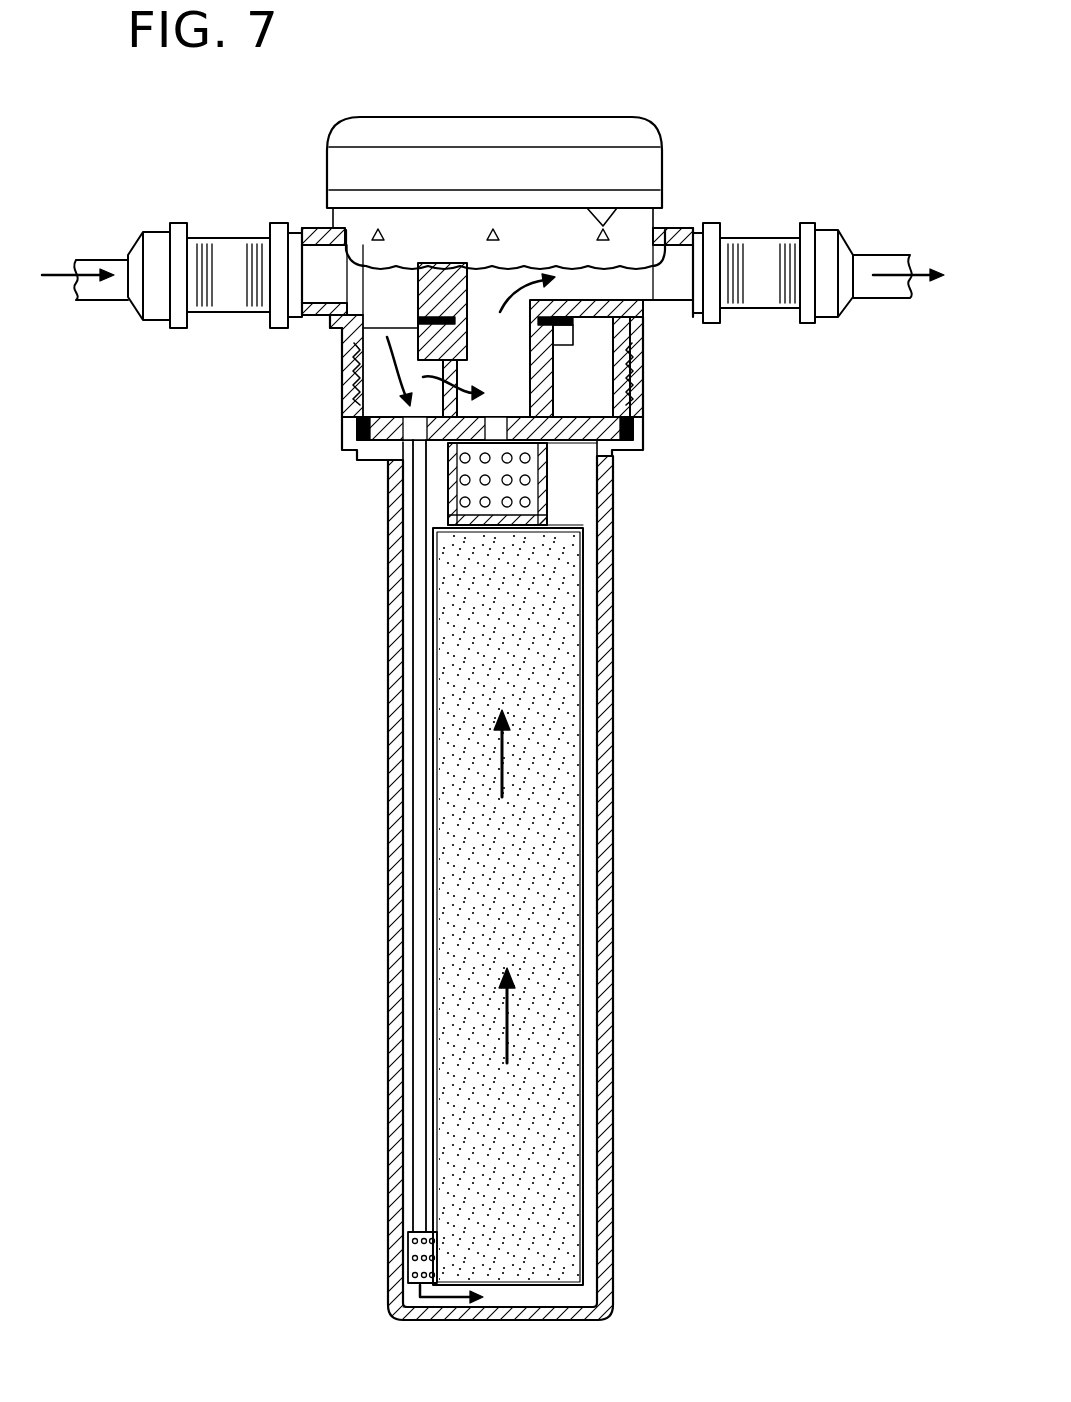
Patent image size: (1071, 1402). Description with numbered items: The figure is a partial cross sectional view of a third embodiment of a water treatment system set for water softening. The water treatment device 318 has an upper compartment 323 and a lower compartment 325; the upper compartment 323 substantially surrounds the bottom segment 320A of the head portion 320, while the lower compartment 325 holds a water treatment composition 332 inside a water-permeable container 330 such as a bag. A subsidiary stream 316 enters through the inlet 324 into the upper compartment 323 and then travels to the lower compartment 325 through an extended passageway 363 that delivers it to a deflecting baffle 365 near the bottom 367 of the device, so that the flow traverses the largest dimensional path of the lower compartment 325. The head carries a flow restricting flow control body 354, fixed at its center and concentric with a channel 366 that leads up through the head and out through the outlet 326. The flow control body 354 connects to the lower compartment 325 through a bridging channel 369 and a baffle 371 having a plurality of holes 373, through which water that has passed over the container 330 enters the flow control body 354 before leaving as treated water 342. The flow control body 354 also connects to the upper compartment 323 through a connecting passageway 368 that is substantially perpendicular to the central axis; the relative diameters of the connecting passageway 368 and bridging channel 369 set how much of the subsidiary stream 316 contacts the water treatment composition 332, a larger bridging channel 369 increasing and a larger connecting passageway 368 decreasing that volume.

The subsidiary stream 316 is at (79, 269).
The water treatment device 318 is at (613, 655).
The head portion 320 is at (284, 432).
The bottom segment 320A is at (650, 380).
The upper compartment 323 is at (383, 357).
The inlet 324 is at (230, 237).
The lower compartment 325 is at (577, 512).
The outlet 326 is at (760, 233).
The water-permeable container 330 is at (585, 740).
The water treatment composition 332 is at (530, 865).
The treated water 342 is at (925, 264).
The flow control body 354 is at (445, 372).
The extended passageway 363 is at (418, 838).
The deflecting baffle 365 is at (403, 1283).
The channel 366 is at (510, 345).
The bottom 367 is at (677, 1273).
The connecting passageway 368 is at (417, 423).
The bridging channel 369 is at (497, 420).
The baffle 371 is at (450, 520).
The holes 373 is at (530, 480).